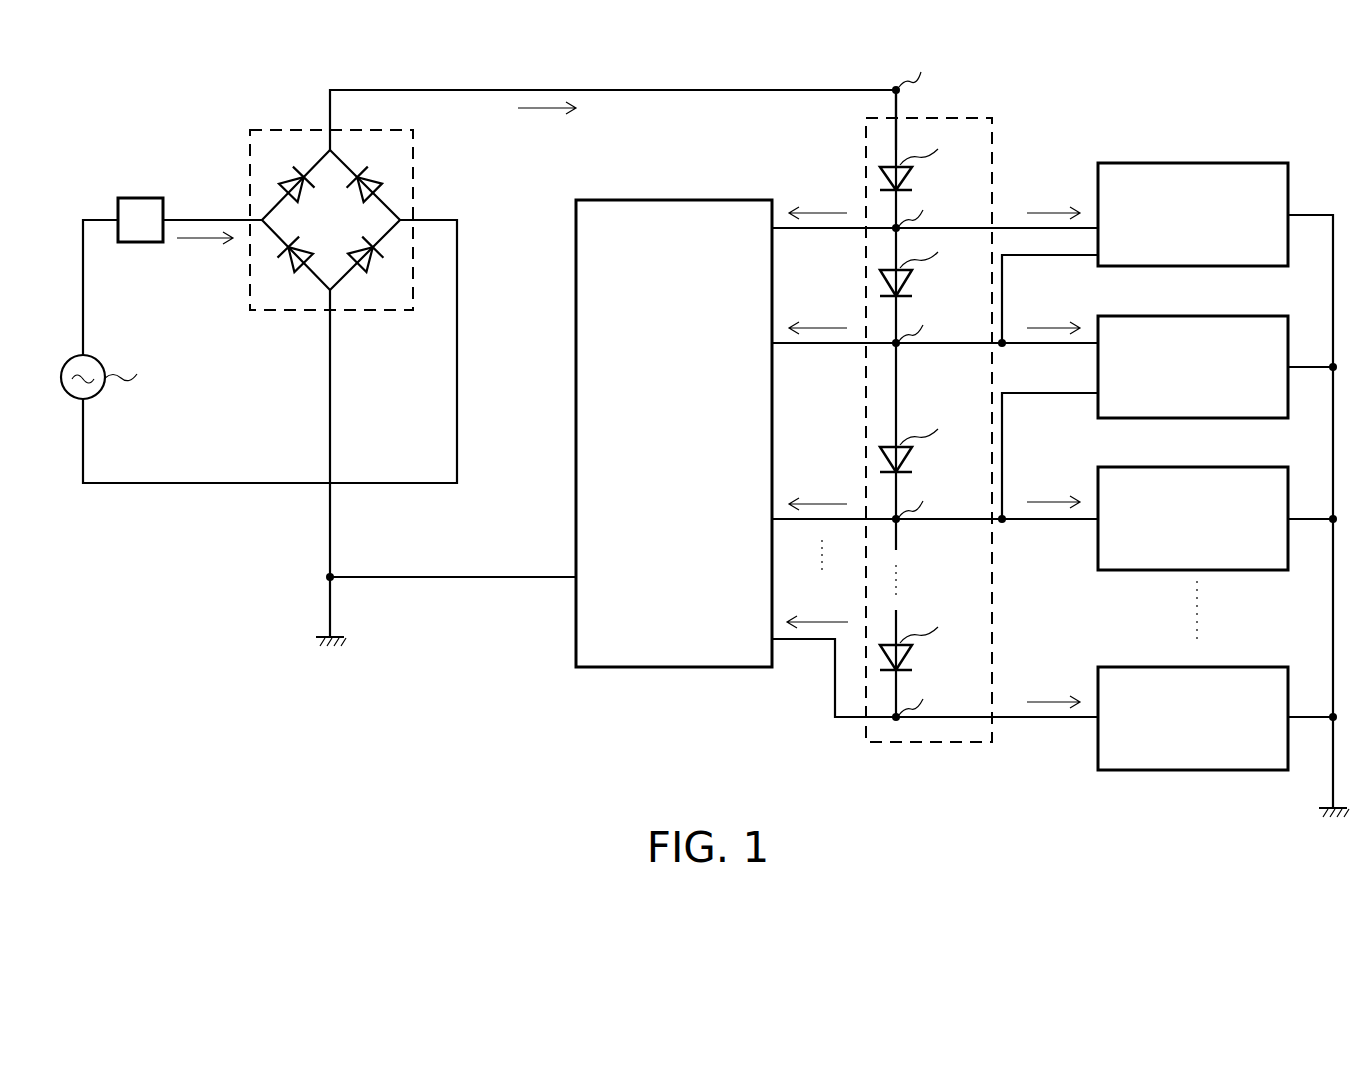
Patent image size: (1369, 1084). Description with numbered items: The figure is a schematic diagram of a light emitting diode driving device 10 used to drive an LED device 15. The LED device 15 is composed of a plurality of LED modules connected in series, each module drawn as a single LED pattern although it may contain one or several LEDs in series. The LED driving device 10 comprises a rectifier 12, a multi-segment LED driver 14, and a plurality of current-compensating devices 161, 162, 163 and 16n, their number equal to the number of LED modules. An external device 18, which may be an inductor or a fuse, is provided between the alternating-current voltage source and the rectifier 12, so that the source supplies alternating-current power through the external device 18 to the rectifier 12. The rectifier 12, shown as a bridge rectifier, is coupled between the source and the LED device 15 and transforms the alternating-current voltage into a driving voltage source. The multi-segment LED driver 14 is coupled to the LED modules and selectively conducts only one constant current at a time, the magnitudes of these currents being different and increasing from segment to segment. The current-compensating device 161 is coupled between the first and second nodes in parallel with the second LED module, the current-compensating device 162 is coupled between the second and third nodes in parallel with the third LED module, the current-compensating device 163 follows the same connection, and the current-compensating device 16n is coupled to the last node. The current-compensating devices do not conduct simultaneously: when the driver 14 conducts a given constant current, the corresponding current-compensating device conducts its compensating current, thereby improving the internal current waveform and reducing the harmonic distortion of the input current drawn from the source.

The light emitting diode driving device 10 is at (117, 690).
The rectifier 12 is at (413, 135).
The multi-segment LED driver 14 is at (672, 200).
The LED device 15 is at (992, 135).
The external device 18 is at (140, 198).
The current-compensating device 161 is at (1260, 163).
The current-compensating device 162 is at (1260, 316).
The current-compensating device 163 is at (1260, 467).
The current-compensating device 16n is at (1260, 667).